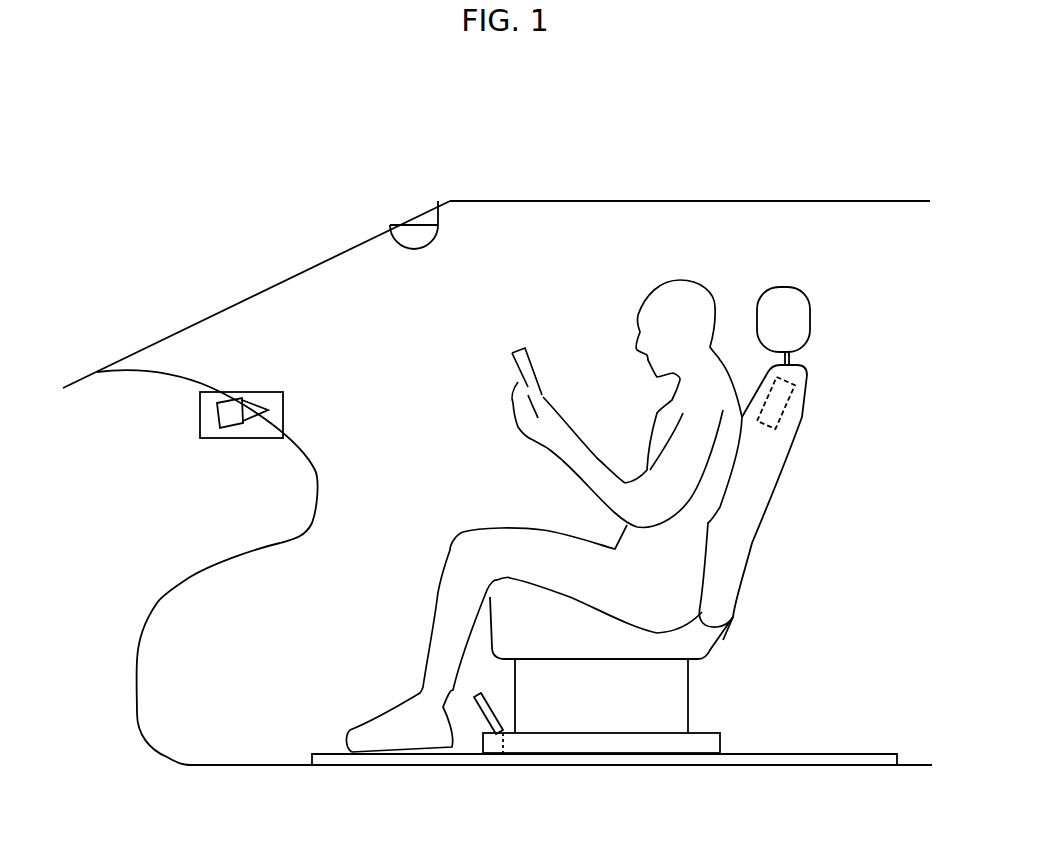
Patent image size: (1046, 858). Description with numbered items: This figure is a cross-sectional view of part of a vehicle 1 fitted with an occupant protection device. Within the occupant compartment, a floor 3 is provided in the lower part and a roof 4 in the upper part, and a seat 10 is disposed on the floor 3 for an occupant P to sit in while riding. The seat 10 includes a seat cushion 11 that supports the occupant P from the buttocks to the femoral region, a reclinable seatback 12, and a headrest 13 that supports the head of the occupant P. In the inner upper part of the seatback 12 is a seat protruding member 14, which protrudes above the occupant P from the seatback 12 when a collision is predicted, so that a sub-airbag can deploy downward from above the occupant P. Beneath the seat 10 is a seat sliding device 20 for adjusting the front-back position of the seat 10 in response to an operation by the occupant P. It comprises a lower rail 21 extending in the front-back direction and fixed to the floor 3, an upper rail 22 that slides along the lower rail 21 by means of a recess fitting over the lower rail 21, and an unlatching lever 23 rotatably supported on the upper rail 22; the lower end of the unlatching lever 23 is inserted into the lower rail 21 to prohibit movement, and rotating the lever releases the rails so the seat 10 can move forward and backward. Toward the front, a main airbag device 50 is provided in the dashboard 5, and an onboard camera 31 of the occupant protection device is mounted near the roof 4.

The vehicle 1 is at (790, 161).
The floor 3 is at (915, 763).
The roof 4 is at (913, 200).
The dashboard 5 is at (173, 388).
The seat 10 is at (803, 484).
The seat cushion 11 is at (643, 648).
The seatback 12 is at (737, 543).
The headrest 13 is at (797, 322).
The seat protruding member 14 is at (780, 405).
The seat sliding device 20 is at (775, 741).
The lower rail 21 is at (800, 757).
The upper rail 22 is at (612, 740).
The unlatching lever 23 is at (488, 707).
The onboard camera 31 is at (413, 249).
The main airbag device 50 is at (253, 427).
The occupant P is at (636, 318).